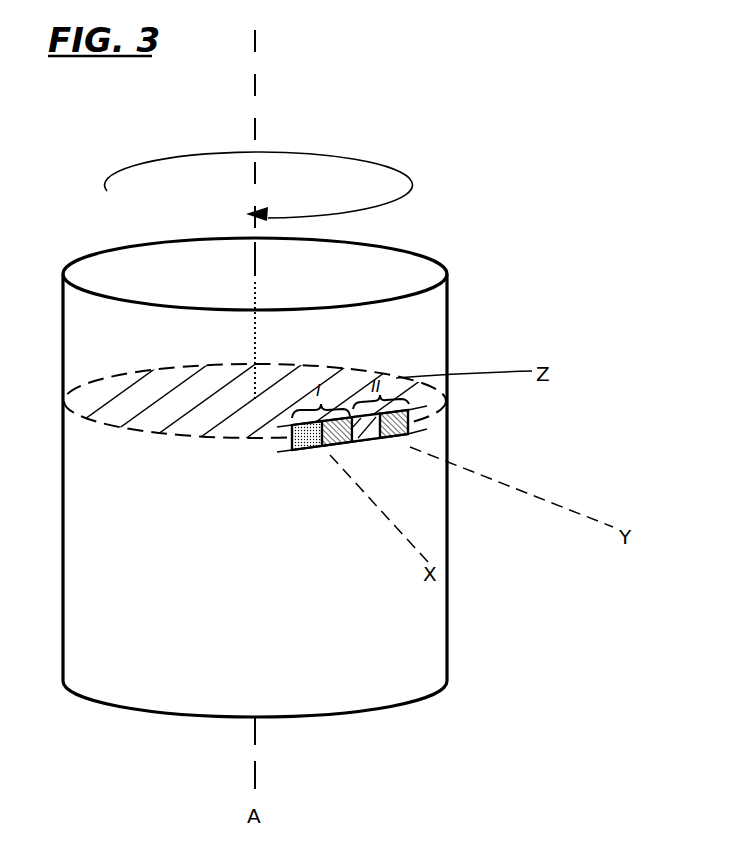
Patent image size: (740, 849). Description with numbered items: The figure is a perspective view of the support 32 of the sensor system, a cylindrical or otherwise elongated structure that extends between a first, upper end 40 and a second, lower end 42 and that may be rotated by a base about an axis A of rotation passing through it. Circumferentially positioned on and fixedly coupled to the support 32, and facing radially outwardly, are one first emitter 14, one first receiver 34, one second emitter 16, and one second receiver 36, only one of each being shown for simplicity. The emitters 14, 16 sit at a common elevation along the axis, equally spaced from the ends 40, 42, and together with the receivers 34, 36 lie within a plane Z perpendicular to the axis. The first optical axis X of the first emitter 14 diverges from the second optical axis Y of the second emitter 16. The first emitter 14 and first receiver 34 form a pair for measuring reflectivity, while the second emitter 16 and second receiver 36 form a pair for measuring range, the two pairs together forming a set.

The first emitter 14 is at (303, 451).
The second emitter 16 is at (367, 447).
The support 32 is at (304, 491).
The first receiver 34 is at (337, 444).
The second receiver 36 is at (367, 462).
The first end 40 is at (95, 266).
The second end 42 is at (150, 717).